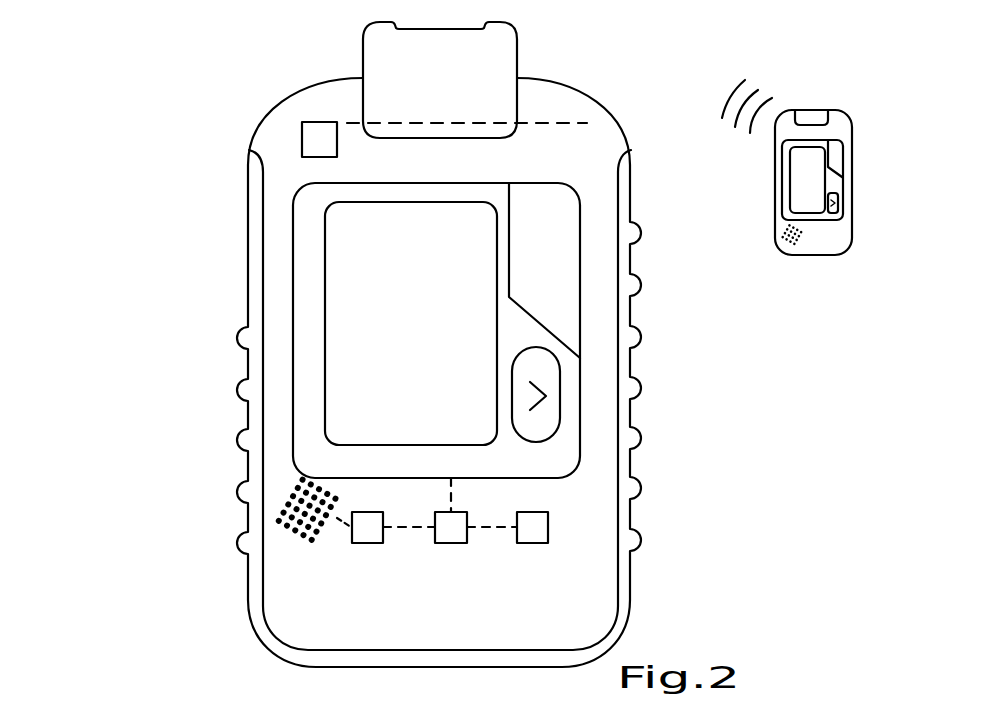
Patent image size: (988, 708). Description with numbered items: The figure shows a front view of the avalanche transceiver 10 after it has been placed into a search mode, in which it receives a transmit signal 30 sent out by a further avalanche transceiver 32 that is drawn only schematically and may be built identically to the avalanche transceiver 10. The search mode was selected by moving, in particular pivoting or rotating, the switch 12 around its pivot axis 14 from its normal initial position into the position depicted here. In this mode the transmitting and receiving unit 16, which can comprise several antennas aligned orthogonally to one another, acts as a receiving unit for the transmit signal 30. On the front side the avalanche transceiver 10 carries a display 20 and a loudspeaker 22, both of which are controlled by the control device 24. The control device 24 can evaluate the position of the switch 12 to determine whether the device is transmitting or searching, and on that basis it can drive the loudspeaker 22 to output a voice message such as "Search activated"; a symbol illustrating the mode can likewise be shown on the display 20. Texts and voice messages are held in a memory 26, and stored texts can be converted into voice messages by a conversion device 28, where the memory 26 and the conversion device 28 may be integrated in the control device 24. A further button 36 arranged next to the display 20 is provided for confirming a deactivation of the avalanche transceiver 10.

The avalanche transceiver 10 is at (163, 168).
The switch 12 is at (502, 78).
The pivot axis 14 is at (558, 121).
The transmitting and receiving unit 16 is at (320, 134).
The display 20 is at (350, 318).
The loudspeaker 22 is at (278, 508).
The control device 24 is at (450, 537).
The memory 26 is at (535, 537).
The conversion device 28 is at (370, 537).
The transmit signal 30 is at (755, 90).
The further avalanche transceiver 32 is at (850, 108).
The further button 36 is at (552, 387).